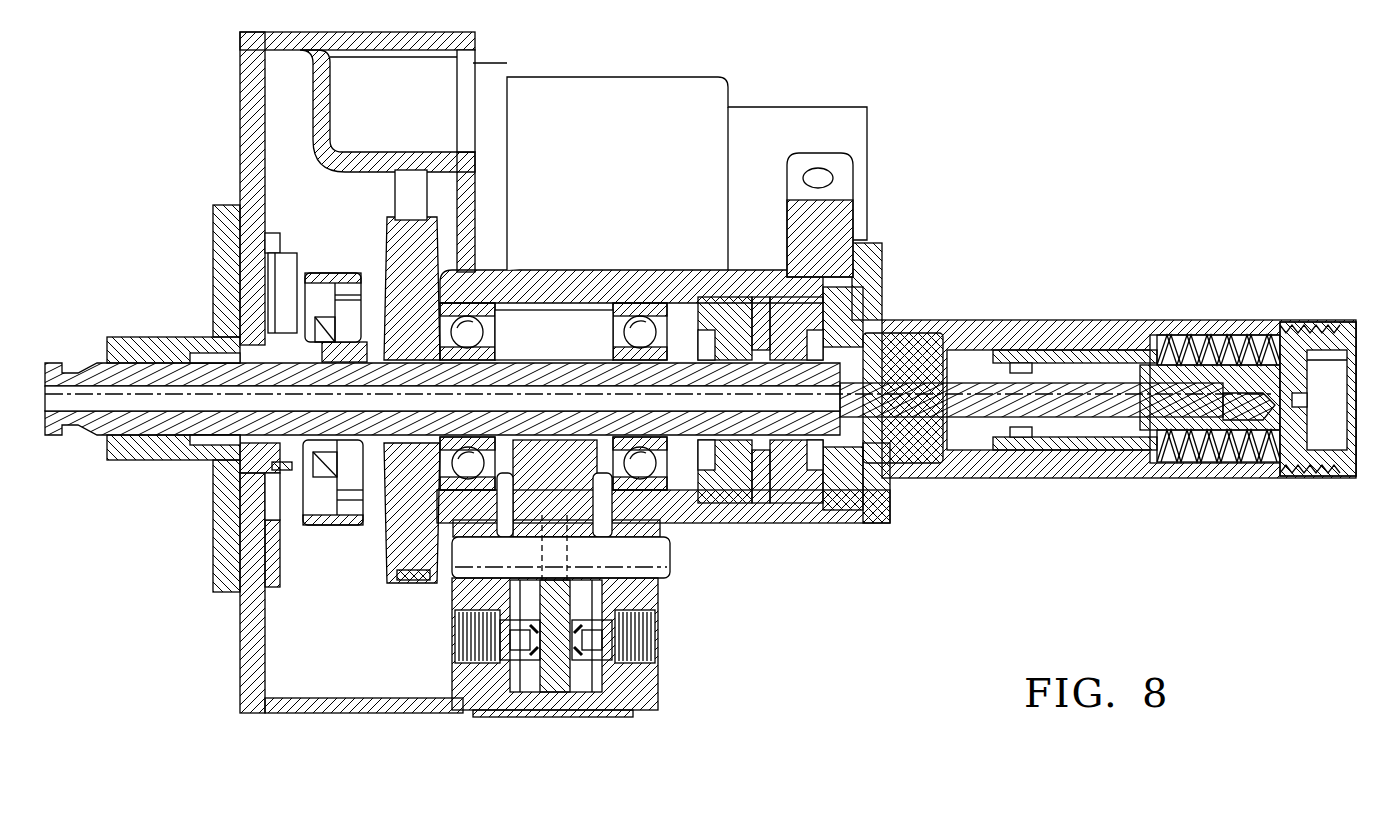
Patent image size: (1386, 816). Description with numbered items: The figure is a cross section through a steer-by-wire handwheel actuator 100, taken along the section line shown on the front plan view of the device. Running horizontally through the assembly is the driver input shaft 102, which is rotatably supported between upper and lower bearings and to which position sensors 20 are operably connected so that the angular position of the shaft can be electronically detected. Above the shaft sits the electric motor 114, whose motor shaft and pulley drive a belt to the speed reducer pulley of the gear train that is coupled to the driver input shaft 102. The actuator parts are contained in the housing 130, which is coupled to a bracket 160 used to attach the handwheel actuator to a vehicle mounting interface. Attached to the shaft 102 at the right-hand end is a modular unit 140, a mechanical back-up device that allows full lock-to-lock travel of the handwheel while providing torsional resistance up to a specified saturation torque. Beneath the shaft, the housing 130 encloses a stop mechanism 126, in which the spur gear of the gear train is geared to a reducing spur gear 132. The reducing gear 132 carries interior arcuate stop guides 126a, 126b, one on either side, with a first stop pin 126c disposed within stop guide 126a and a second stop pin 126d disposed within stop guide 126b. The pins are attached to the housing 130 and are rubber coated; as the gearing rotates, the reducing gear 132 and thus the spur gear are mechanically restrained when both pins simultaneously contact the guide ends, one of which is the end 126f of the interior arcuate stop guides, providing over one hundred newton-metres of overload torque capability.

The handwheel actuator 100 is at (1086, 115).
The driver input shaft 102 is at (73, 427).
The electric motor 114 is at (622, 90).
The bracket 160 is at (841, 160).
The position sensors 20 is at (738, 493).
The modular unit 140 is at (1199, 306).
The stop mechanism 126 is at (590, 619).
The interior arcuate stop guide 126a is at (517, 660).
The interior arcuate stop guide 126b is at (590, 658).
The first stop pin 126c is at (520, 640).
The second stop pin 126d is at (623, 662).
The end of interior arcuate stop guide 126f is at (577, 517).
The housing 130 is at (657, 693).
The reducing spur gear 132 is at (590, 602).